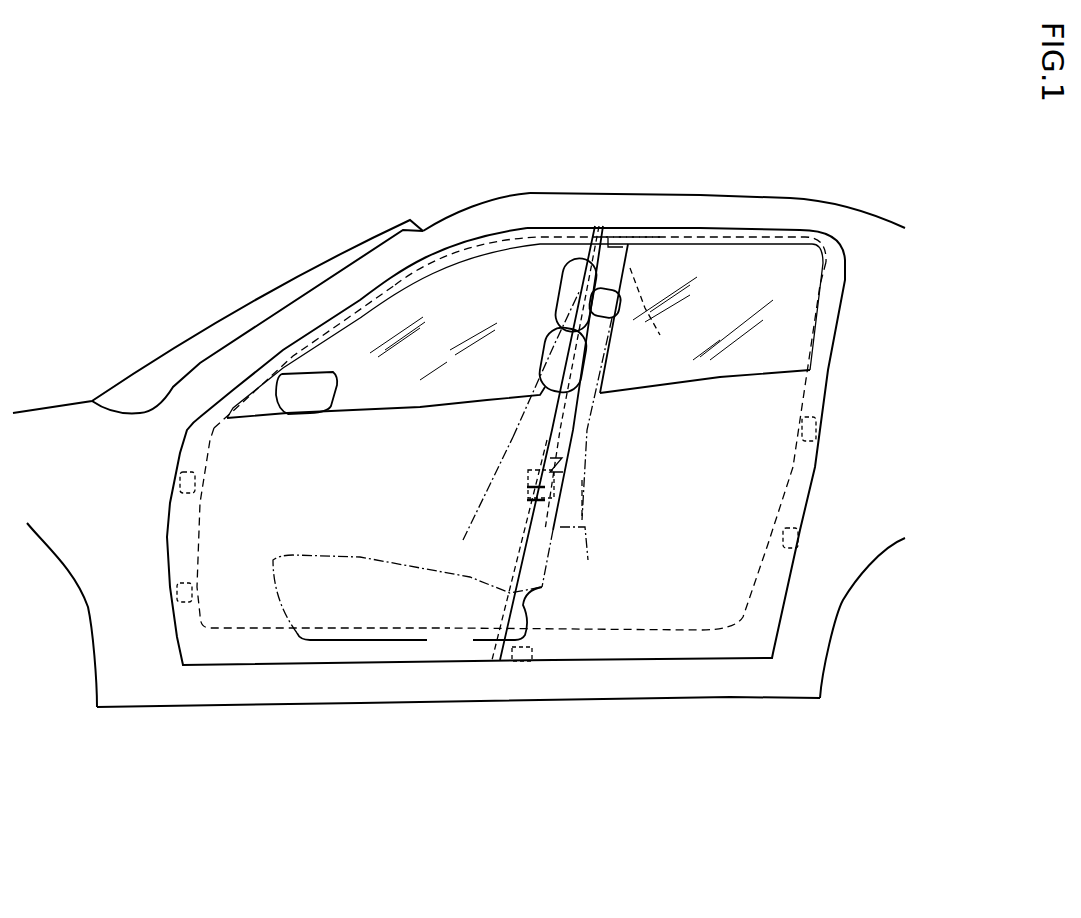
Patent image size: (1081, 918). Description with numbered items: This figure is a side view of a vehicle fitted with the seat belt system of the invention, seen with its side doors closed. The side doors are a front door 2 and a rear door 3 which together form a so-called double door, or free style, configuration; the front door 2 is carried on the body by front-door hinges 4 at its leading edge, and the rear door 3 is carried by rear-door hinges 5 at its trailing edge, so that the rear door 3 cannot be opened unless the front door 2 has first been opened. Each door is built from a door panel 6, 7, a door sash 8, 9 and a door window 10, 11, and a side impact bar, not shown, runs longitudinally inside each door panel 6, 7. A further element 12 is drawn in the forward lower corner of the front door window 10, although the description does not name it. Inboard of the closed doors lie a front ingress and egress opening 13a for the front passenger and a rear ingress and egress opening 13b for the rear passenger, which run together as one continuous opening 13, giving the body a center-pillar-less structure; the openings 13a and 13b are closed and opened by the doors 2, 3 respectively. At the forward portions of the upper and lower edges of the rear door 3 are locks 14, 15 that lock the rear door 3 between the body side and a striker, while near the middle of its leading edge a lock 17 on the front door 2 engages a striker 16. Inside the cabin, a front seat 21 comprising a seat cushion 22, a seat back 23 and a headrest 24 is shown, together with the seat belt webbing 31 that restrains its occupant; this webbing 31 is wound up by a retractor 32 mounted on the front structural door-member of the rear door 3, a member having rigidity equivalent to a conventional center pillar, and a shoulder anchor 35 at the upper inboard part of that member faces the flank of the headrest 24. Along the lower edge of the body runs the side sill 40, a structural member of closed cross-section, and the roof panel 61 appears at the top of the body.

The front door 2 is at (320, 663).
The rear door 3 is at (660, 668).
The front-door hinges 4 is at (180, 481).
The rear-door hinges 5 is at (816, 422).
The door panel 6 is at (254, 503).
The door panel 7 is at (667, 500).
The door sash 8 is at (520, 236).
The door sash 9 is at (716, 228).
The door window 10 is at (445, 328).
The door window 11 is at (690, 323).
The corner garnish 12 is at (306, 405).
The continuous opening 13 is at (655, 238).
The front ingress and egress opening 13a is at (335, 332).
The rear ingress and egress opening 13b is at (790, 247).
The lock 14 is at (654, 311).
The lock 15 is at (517, 665).
The striker 16 is at (527, 483).
The lock 17 is at (585, 452).
The front seat 21 is at (437, 498).
The seat cushion 22 is at (340, 555).
The seat back 23 is at (530, 387).
The headrest 24 is at (560, 276).
The seat belt webbing 31 is at (580, 492).
The retractor 32 is at (590, 540).
The shoulder anchor 35 is at (614, 322).
The side sill 40 is at (425, 695).
The roof panel 61 is at (593, 193).